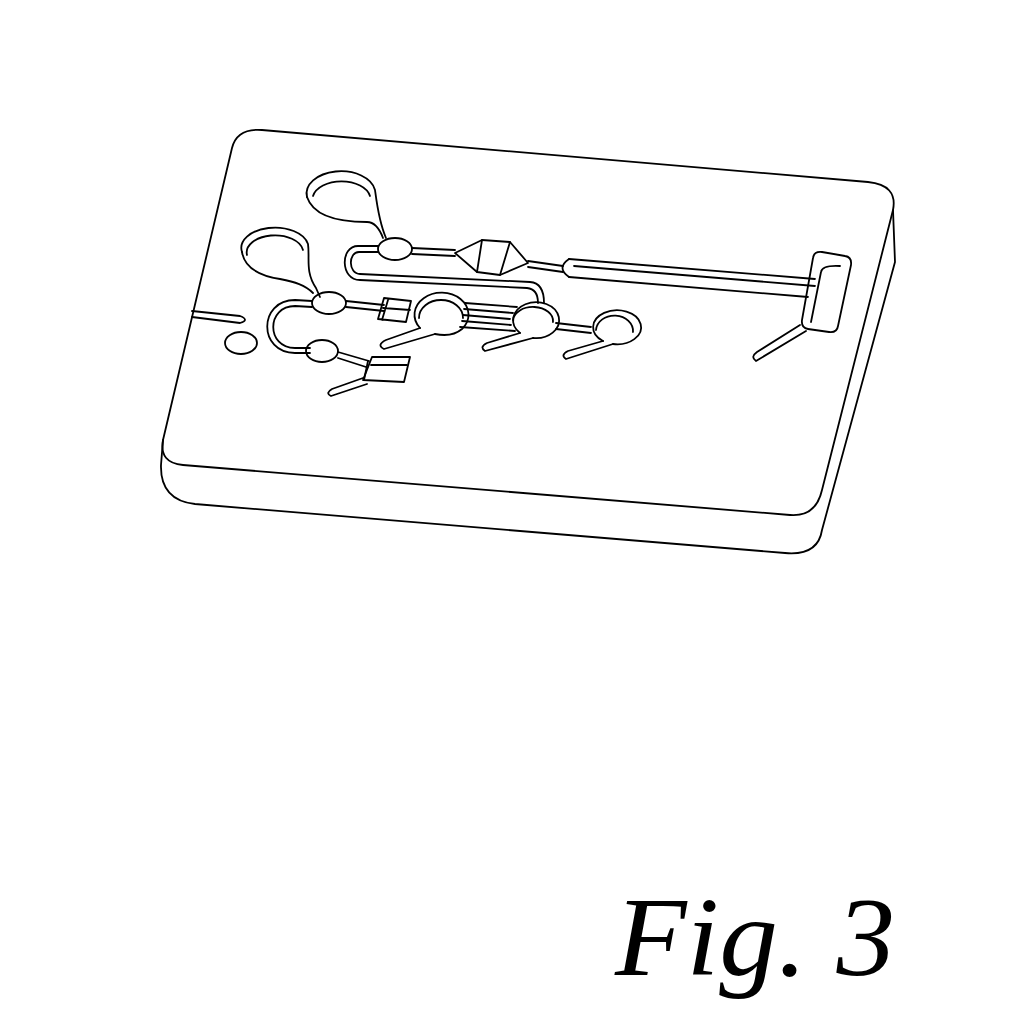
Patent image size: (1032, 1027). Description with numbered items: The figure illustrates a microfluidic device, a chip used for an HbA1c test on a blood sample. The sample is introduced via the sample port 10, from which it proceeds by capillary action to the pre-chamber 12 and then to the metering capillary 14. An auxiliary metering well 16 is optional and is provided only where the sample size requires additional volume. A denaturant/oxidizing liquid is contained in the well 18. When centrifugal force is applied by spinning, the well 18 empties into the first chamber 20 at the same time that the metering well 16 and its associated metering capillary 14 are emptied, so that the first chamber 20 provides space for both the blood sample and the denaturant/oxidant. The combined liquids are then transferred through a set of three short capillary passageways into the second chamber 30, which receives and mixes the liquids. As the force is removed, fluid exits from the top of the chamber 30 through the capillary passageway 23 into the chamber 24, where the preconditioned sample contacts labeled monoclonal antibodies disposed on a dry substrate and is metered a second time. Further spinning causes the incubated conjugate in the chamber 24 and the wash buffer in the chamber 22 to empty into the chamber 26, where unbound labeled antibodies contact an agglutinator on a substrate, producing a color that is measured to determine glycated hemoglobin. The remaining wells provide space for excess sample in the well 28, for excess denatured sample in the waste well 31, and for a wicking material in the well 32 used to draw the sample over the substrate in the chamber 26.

The sample port 10 is at (243, 347).
The pre-chamber 12 is at (327, 357).
The metering capillary 14 is at (277, 305).
The auxiliary metering well 16 is at (323, 300).
The well 18 is at (273, 257).
The first chamber 20 is at (443, 323).
The chamber 22 is at (338, 197).
The capillary passageway 23 is at (423, 278).
The chamber 24 is at (492, 248).
The chamber 26 is at (687, 278).
The well for excess sample 28 is at (380, 373).
The second chamber 30 is at (530, 332).
The waste well 31 is at (617, 342).
The wicking material well 32 is at (832, 280).